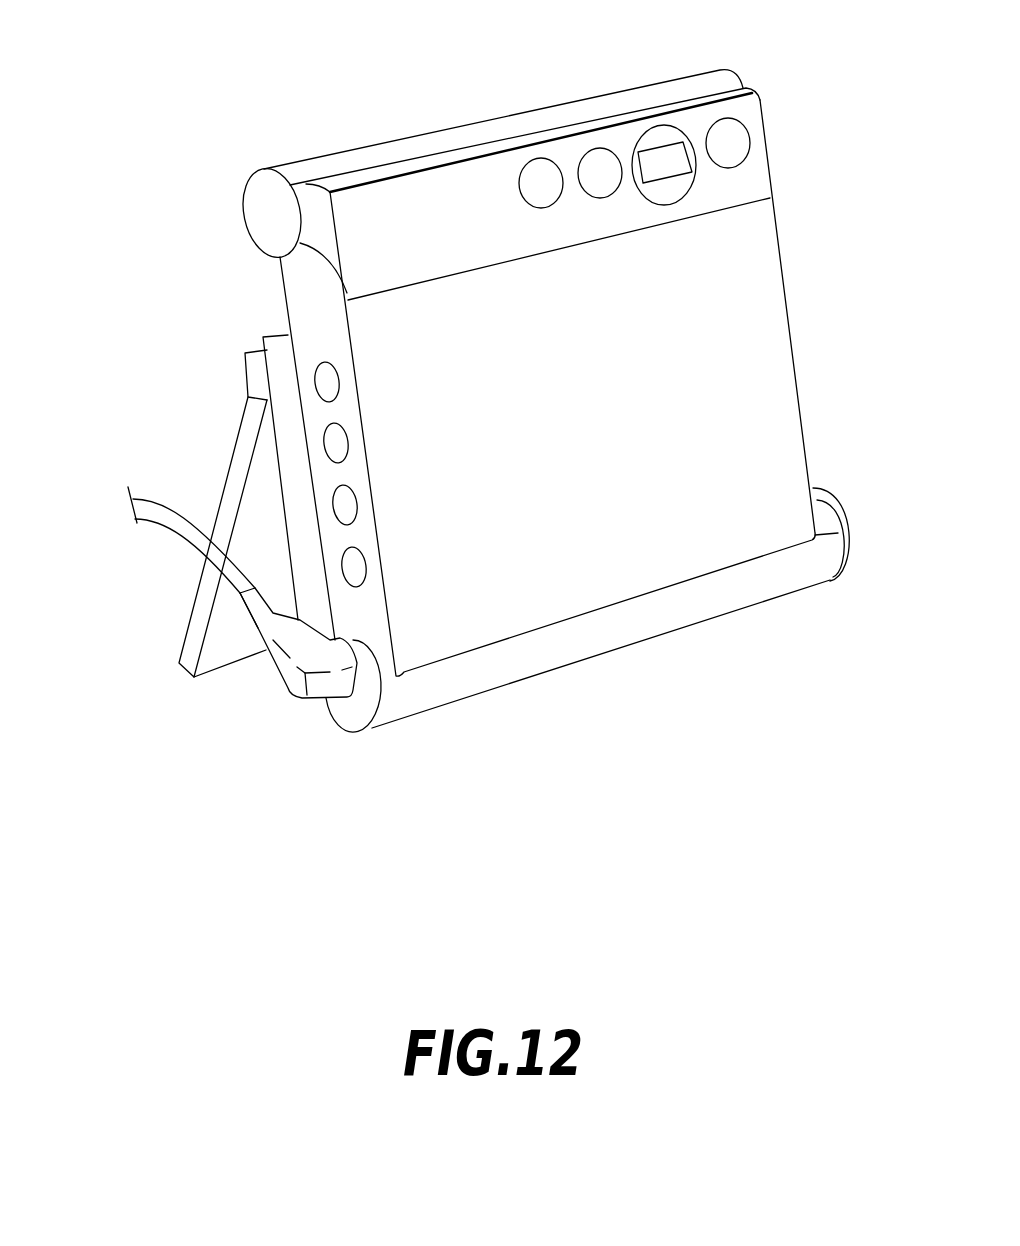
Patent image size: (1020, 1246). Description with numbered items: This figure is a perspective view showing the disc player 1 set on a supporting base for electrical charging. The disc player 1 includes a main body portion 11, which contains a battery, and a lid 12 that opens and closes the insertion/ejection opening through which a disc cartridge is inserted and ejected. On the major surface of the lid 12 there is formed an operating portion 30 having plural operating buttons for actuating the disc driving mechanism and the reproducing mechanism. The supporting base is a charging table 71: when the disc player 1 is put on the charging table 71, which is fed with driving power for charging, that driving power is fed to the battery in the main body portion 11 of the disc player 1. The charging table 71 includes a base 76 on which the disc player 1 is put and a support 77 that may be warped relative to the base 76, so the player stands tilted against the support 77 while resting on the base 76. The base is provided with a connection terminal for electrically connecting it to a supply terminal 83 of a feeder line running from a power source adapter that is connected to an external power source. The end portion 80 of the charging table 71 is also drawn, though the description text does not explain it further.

The disc player 1 is at (750, 405).
The main body portion 11 is at (742, 289).
The lid 12 is at (443, 205).
The operating portion 30 is at (618, 211).
The charging table 71 is at (547, 680).
The base 76 is at (307, 548).
The support 77 is at (190, 620).
The end cap 80 is at (718, 597).
The supply terminal 83 is at (350, 700).